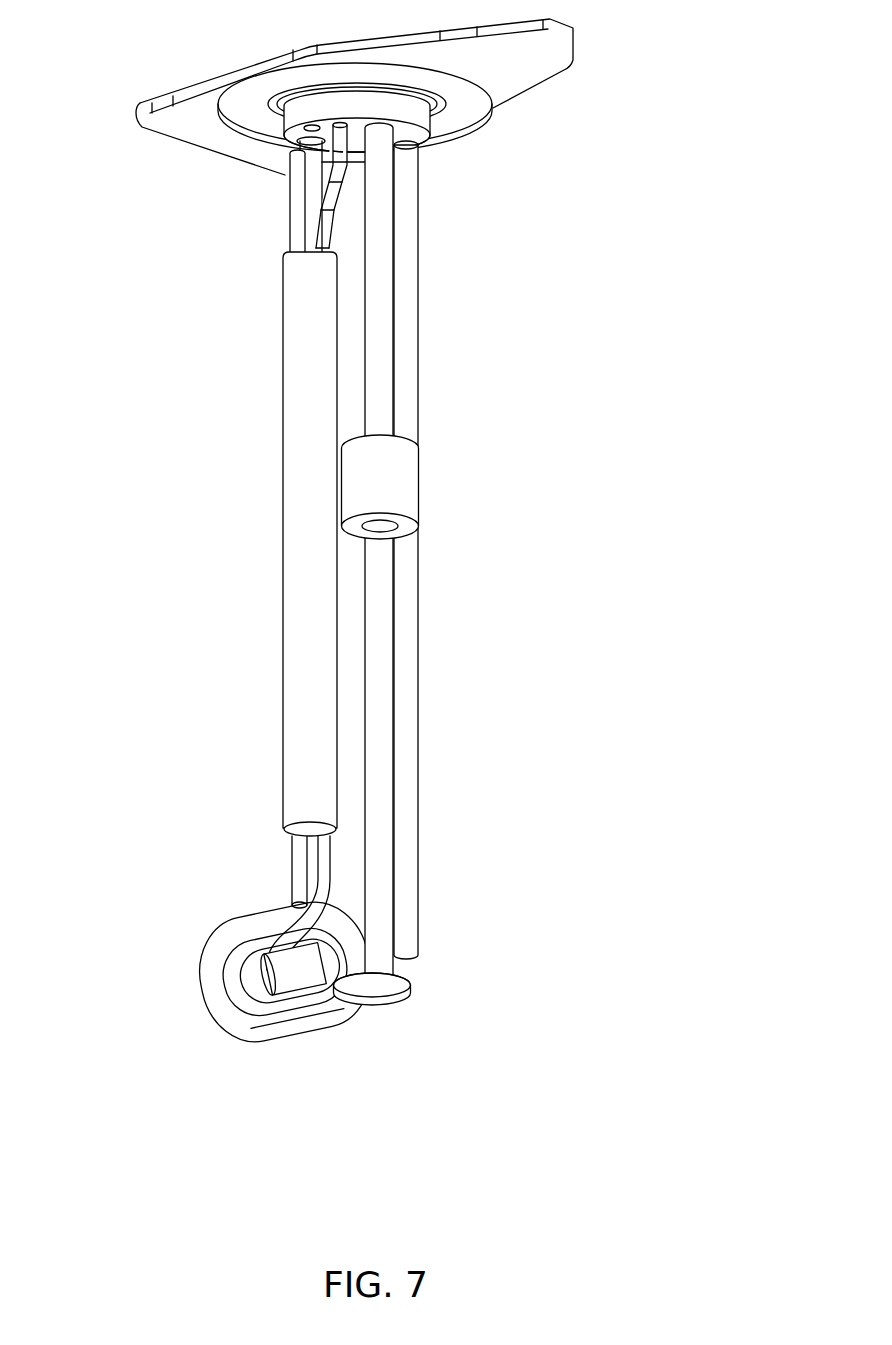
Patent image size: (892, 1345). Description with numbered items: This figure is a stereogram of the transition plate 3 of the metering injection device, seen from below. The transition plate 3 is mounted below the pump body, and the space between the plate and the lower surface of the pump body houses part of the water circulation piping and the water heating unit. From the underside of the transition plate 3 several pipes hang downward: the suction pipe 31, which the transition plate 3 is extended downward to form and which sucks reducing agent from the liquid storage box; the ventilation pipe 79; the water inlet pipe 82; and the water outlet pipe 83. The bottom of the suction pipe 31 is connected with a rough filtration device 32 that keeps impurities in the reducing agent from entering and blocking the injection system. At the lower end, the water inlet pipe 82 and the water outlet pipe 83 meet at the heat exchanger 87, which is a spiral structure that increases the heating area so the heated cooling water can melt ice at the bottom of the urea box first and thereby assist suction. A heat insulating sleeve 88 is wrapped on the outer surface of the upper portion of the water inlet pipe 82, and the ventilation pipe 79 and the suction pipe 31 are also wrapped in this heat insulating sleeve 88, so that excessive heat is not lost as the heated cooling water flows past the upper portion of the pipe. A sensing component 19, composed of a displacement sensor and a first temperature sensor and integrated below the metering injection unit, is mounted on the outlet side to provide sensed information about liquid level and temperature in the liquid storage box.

The transition plate 3 is at (413, 102).
The sensing component 19 is at (513, 556).
The suction pipe 31 is at (423, 217).
The rough filtration device 32 is at (438, 1050).
The ventilation pipe 79 is at (230, 556).
The water inlet pipe 82 is at (215, 529).
The water outlet pipe 83 is at (499, 550).
The heat exchanger 87 is at (329, 1035).
The heat insulating sleeve 88 is at (189, 544).